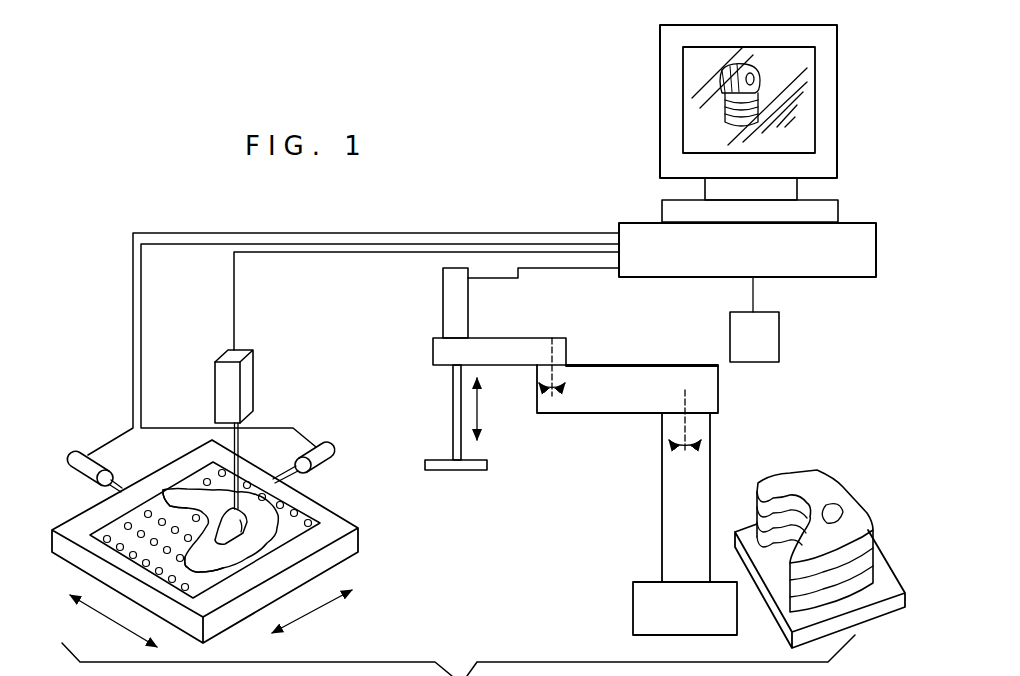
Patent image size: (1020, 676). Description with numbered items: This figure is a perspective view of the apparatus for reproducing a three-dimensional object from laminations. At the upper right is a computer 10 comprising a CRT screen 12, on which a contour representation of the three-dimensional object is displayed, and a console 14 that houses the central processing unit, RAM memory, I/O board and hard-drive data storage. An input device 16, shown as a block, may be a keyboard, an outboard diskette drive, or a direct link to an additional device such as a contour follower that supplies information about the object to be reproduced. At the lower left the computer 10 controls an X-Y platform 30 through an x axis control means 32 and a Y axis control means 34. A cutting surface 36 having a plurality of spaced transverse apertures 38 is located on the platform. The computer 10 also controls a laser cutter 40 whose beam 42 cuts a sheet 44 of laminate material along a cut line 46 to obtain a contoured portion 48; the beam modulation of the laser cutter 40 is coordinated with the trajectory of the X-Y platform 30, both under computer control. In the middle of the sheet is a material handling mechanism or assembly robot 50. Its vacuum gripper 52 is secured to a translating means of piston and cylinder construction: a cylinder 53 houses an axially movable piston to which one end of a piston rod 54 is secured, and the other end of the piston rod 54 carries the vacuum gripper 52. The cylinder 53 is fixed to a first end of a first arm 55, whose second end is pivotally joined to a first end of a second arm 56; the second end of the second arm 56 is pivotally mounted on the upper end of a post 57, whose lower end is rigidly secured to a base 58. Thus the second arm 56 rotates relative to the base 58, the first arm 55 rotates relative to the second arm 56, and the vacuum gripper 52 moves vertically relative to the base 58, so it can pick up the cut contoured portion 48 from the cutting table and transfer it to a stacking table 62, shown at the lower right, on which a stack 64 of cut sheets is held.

The computer 10 is at (652, 54).
The CRT screen 12 is at (703, 113).
The console 14 is at (665, 238).
The input device 16 is at (765, 338).
The X-Y platform 30 is at (352, 554).
The x axis control means 32 is at (322, 450).
The Y axis control means 34 is at (88, 455).
The cutting surface 36 is at (282, 513).
The apertures 38 is at (113, 547).
The laser cutter 40 is at (257, 355).
The beam 42 is at (240, 447).
The sheet 44 is at (193, 562).
The cut line 46 is at (243, 530).
The contoured portion 48 is at (173, 498).
The assembly robot 50 is at (612, 360).
The vacuum gripper 52 is at (472, 465).
The cylinder 53 is at (457, 316).
The piston rod 54 is at (453, 390).
The first arm 55 is at (492, 347).
The second arm 56 is at (642, 390).
The post 57 is at (683, 508).
The base 58 is at (668, 602).
The stacking table 62 is at (887, 587).
The stack 64 is at (855, 523).